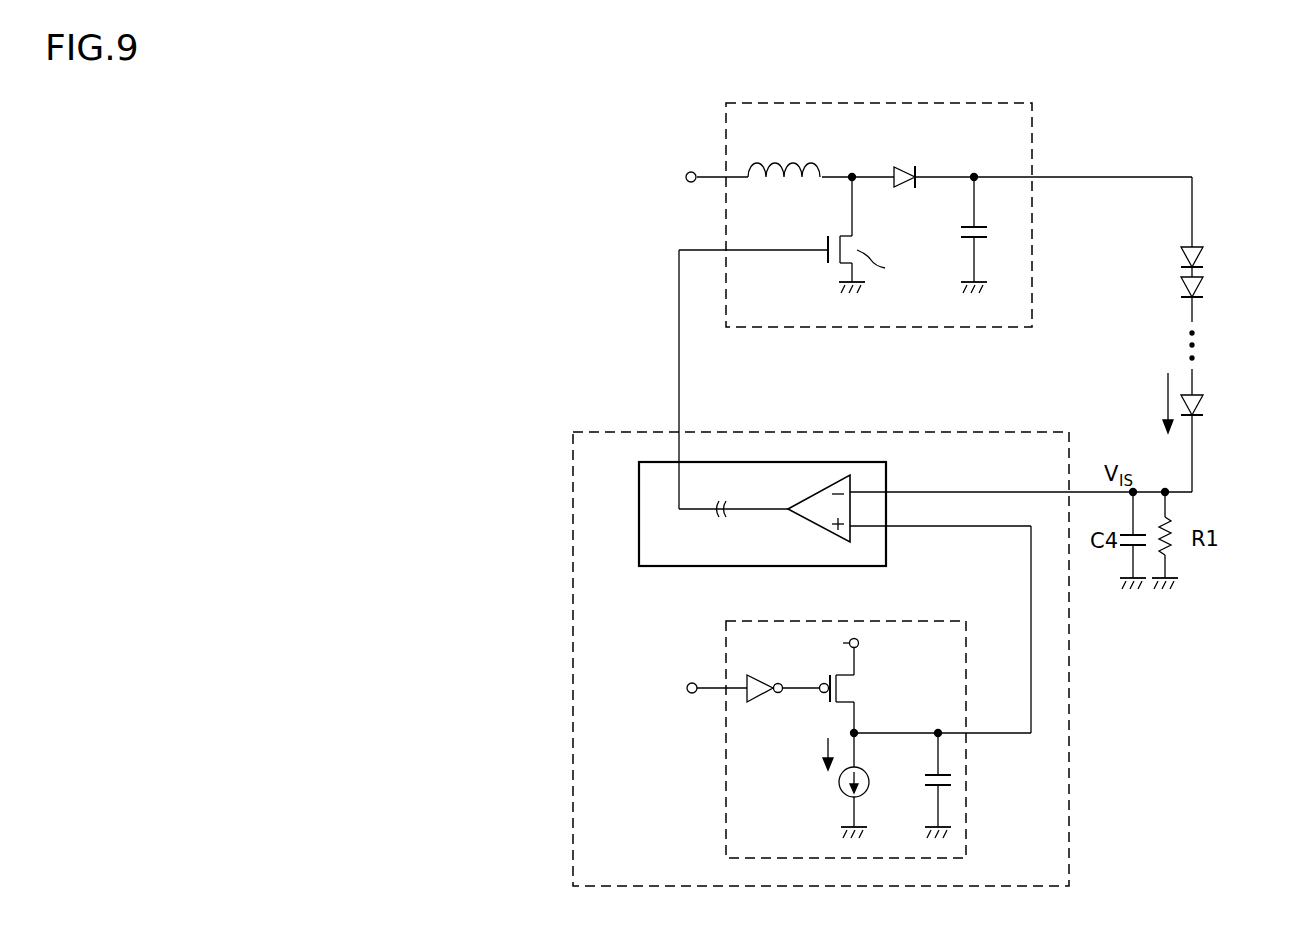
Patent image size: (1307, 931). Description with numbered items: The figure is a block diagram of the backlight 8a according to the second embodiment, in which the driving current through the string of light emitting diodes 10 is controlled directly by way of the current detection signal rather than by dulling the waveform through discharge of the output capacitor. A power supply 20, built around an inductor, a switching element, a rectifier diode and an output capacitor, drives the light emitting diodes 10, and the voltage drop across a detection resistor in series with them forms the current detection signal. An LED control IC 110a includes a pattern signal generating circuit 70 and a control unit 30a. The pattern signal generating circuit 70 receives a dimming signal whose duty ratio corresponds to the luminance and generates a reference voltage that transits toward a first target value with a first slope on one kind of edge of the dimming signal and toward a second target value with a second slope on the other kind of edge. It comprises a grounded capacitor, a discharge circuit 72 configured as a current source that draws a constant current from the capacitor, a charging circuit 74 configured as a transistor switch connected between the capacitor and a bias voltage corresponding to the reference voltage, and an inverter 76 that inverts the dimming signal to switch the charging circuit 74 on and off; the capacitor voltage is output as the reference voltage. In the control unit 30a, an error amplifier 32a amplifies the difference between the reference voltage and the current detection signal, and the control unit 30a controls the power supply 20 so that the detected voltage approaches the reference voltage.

The backlight 8a is at (1254, 80).
The power supply 20 is at (950, 102).
The LED string 10 is at (1214, 237).
The LED control IC 110a is at (573, 553).
The control unit 30a is at (680, 566).
The error amplifier 32a is at (810, 518).
The pattern signal generating circuit 70 is at (966, 802).
The discharge circuit 72 is at (839, 785).
The charging circuit 74 is at (858, 690).
The inverter 76 is at (762, 702).